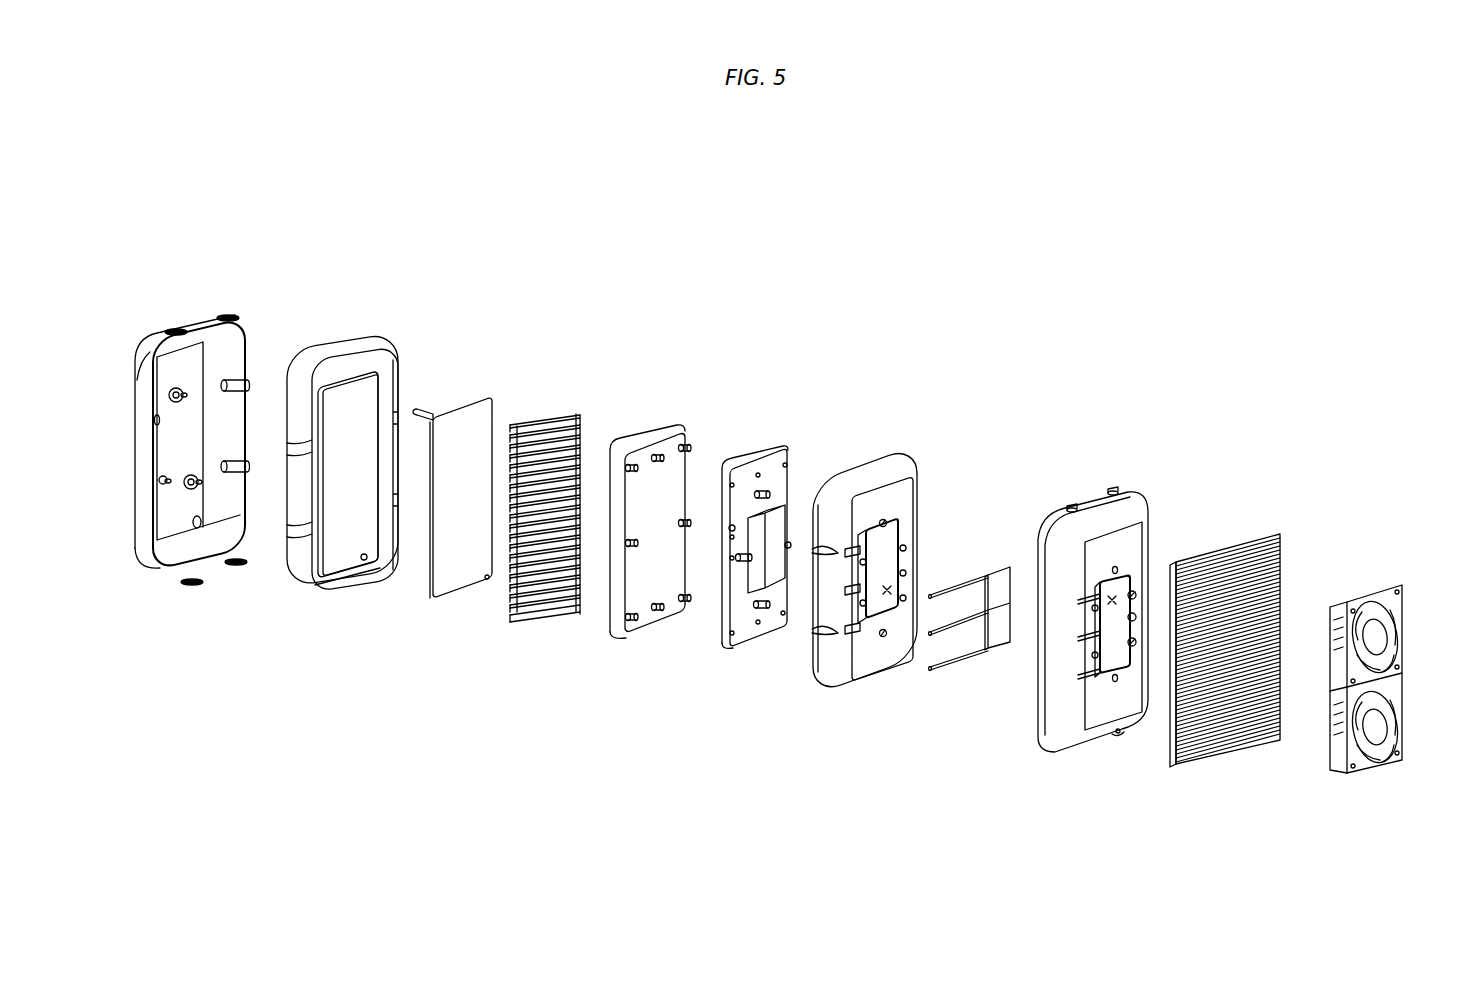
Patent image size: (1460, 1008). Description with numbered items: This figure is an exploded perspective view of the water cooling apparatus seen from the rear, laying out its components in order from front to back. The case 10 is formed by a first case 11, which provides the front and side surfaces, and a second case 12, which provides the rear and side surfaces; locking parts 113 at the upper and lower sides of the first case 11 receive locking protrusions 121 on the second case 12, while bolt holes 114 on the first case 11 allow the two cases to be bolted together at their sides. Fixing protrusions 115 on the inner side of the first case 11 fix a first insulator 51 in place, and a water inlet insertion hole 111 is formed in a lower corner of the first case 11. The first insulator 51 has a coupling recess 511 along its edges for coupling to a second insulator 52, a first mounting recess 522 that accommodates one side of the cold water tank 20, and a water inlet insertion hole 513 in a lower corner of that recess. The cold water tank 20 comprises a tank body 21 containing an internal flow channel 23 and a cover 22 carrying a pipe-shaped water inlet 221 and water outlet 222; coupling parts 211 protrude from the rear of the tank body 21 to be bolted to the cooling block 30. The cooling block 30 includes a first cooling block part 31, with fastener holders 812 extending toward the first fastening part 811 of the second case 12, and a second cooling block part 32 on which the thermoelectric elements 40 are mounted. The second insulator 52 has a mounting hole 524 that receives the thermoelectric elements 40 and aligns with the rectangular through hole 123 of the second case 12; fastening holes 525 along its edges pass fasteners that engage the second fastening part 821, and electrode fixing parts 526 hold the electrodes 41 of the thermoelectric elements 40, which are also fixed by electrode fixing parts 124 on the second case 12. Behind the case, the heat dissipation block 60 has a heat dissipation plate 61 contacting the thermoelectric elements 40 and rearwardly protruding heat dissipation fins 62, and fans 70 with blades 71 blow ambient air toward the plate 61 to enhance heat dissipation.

The case 10 is at (154, 322).
The first case 11 is at (140, 356).
The water inlet insertion hole 111 is at (198, 528).
The locking part 113 is at (227, 316).
The bolt hole 114 is at (250, 472).
The fixing protrusion 115 is at (184, 388).
The second case 12 is at (1140, 496).
The locking protrusion 121 is at (1113, 491).
The through hole 123 is at (1108, 597).
The electrode fixing part 124 is at (1080, 600).
The cold water tank 20 is at (626, 440).
The tank body 21 is at (656, 434).
The coupling part 211 is at (687, 445).
The cover 22 is at (468, 398).
The water inlet 221 is at (488, 580).
The water outlet 222 is at (430, 414).
The internal flow channel 23 is at (558, 418).
The cooling block 30 is at (739, 460).
The first cooling block part 31 is at (764, 449).
The second cooling block part 32 is at (772, 533).
The thermoelectric element 40 is at (997, 567).
The electrode 41 is at (957, 660).
The first insulator 51 is at (335, 356).
The coupling recess 511 is at (345, 578).
The water inlet insertion hole 513 is at (366, 561).
The second insulator 52 is at (895, 450).
The first mounting recess 522 is at (353, 413).
The mounting hole 524 is at (893, 603).
The fastening hole 525 is at (905, 545).
The electrode fixing part 526 is at (847, 553).
The heat dissipation block 60 is at (1205, 713).
The heat dissipation plate 61 is at (1172, 740).
The heat dissipation fin 62 is at (1188, 765).
The fan 70 is at (1402, 676).
The blade 71 is at (1376, 592).
The first fastening part 811 is at (1097, 640).
The fastener holder 812 is at (757, 612).
The second fastening part 821 is at (1136, 640).